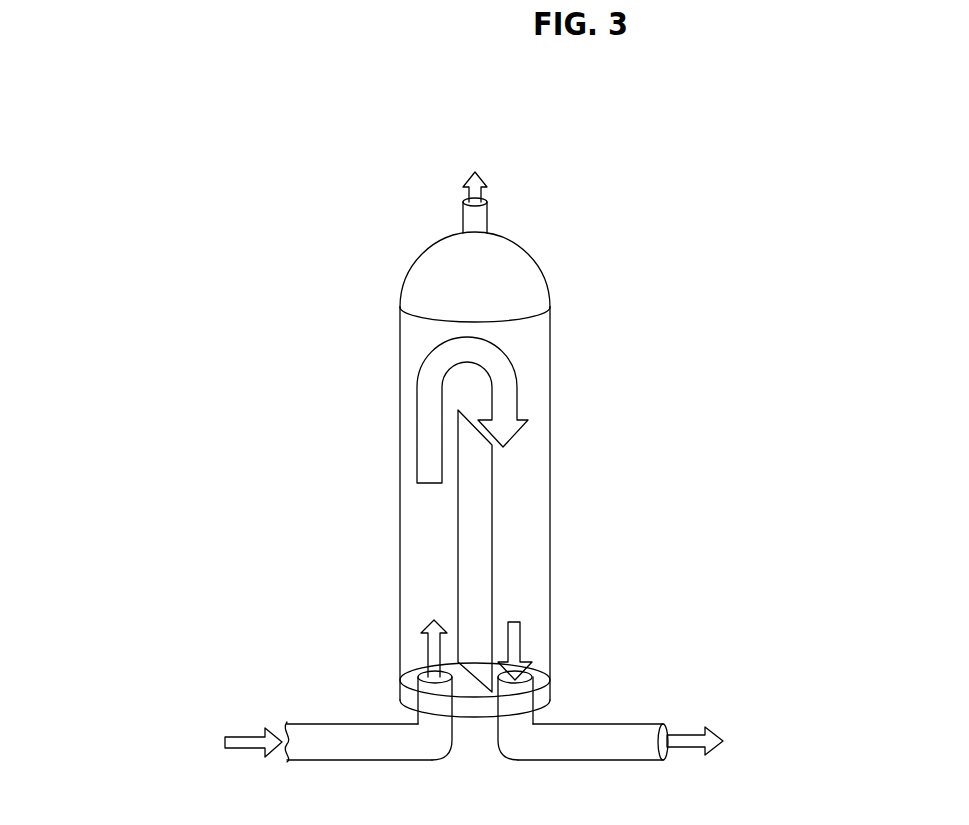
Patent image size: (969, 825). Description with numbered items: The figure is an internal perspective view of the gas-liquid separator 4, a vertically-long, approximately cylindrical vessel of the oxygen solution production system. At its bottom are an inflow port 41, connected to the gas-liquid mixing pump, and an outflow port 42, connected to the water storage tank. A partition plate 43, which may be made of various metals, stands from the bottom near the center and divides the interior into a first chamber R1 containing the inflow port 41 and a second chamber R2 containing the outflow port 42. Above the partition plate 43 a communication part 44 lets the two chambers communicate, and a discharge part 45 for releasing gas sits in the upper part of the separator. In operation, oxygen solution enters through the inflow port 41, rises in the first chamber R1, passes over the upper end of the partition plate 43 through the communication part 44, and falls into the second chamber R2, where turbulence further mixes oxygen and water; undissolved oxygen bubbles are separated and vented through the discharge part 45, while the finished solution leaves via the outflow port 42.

The gas-liquid separator 4 is at (325, 357).
The inflow port 41 is at (416, 670).
The outflow port 42 is at (531, 666).
The partition plate 43 is at (477, 512).
The communication part 44 is at (468, 329).
The discharge part 45 is at (481, 219).
The first chamber R1 is at (422, 557).
The second chamber R2 is at (527, 567).